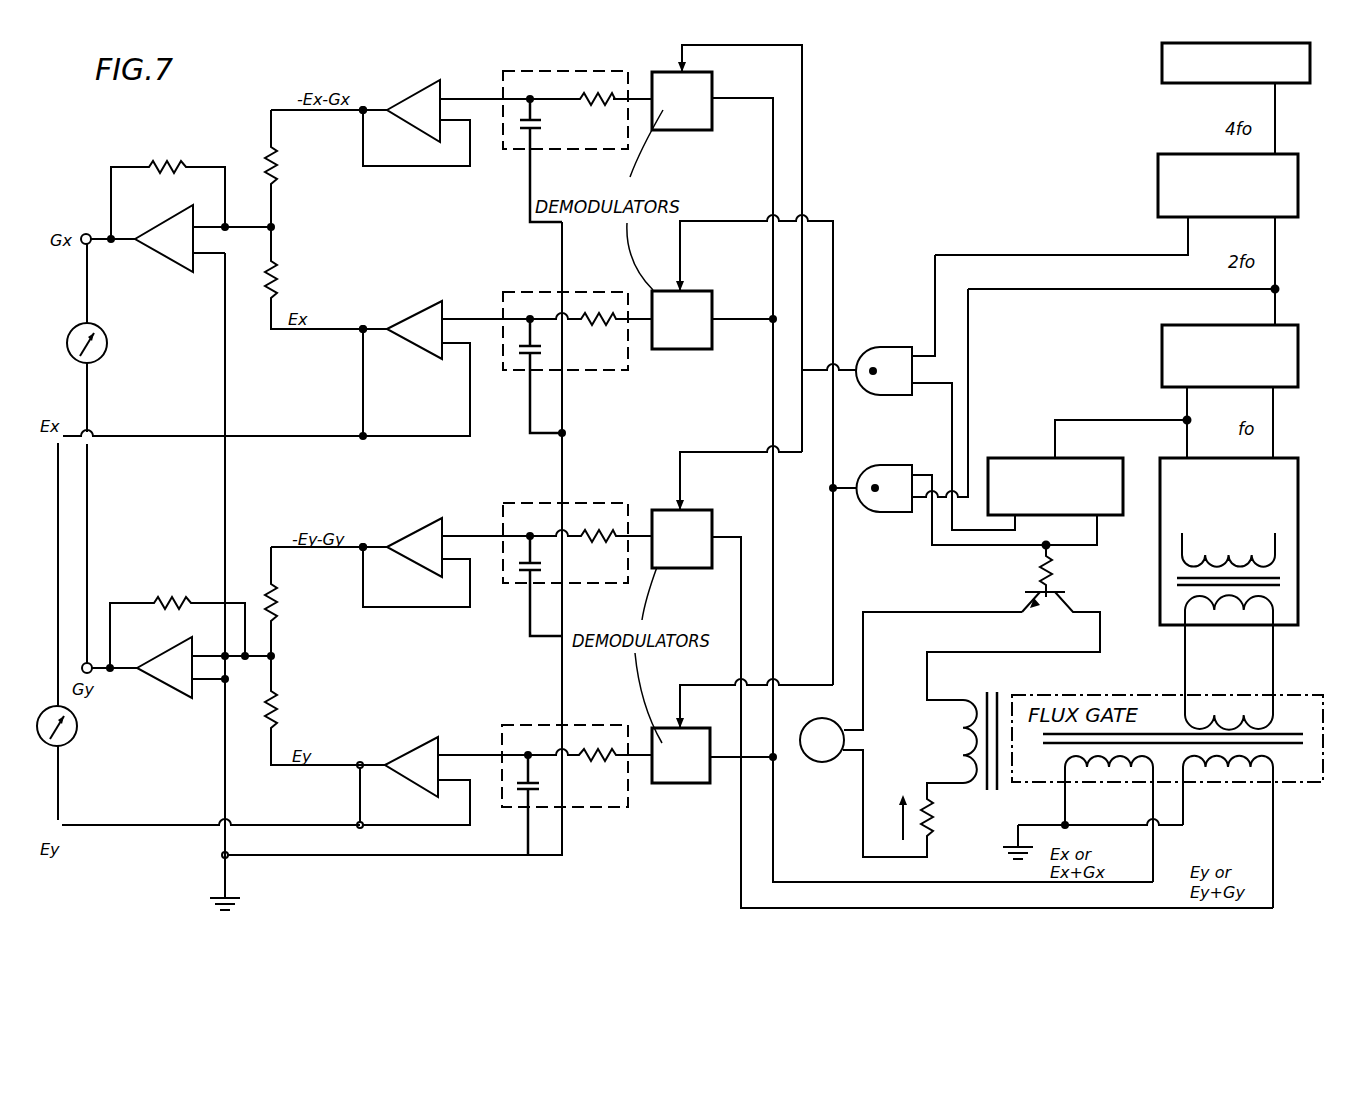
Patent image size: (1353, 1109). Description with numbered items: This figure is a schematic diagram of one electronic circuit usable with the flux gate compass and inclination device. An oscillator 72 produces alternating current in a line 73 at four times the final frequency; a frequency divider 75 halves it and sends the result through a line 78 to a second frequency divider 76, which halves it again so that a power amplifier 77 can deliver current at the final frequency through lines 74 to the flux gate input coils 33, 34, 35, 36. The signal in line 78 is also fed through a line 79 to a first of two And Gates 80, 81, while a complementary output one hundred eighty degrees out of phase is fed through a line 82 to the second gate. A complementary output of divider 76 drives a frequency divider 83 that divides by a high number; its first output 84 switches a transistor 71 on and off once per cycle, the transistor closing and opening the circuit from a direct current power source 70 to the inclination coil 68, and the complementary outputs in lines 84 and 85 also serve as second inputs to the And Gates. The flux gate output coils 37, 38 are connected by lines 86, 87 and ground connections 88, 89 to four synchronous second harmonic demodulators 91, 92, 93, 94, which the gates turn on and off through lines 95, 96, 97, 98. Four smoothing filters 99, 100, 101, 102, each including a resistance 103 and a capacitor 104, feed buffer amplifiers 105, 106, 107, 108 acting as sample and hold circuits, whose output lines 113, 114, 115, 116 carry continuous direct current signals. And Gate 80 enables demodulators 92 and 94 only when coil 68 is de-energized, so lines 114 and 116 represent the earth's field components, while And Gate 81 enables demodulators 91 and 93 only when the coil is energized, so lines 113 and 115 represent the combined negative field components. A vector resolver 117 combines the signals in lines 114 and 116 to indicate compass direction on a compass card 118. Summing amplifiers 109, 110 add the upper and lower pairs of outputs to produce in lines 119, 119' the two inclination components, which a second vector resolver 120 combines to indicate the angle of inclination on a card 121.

The flux gate input coil 33 is at (1229, 688).
The flux gate input coil 34 is at (1229, 688).
The flux gate input coil 35 is at (1229, 688).
The flux gate input coil 36 is at (1290, 648).
The flux gate output coil 37 is at (1098, 768).
The flux gate output coil 38 is at (1233, 772).
The inclination coil 68 is at (962, 740).
The direct current power source 70 is at (812, 762).
The transistor 71 is at (1040, 604).
The oscillator 72 is at (1160, 70).
The line 73 is at (1277, 130).
The lines 74 is at (1249, 670).
The frequency divider 75 is at (1158, 183).
The second frequency divider 76 is at (1160, 352).
The power amplifier 77 is at (1298, 500).
The line 78 is at (1278, 280).
The line 79 is at (1038, 291).
The And Gate 80 is at (881, 464).
The And Gate 81 is at (886, 348).
The line 82 is at (1018, 255).
The frequency divider 83 is at (1005, 458).
The first output 84 is at (1098, 536).
The line 85 is at (998, 530).
The line 86 is at (778, 870).
The line 87 is at (738, 858).
The ground connection 88 is at (1015, 835).
The ground connection 89 is at (231, 894).
The synchronous second harmonic demodulator 91 is at (683, 132).
The synchronous second harmonic demodulator 92 is at (703, 345).
The synchronous second harmonic demodulator 93 is at (688, 573).
The synchronous second harmonic demodulator 94 is at (672, 785).
The line 95 is at (742, 46).
The line 96 is at (717, 222).
The line 97 is at (718, 452).
The line 98 is at (705, 685).
The smoothing filter 99 is at (577, 131).
The smoothing filter 100 is at (593, 291).
The smoothing filter 101 is at (578, 501).
The smoothing filter 102 is at (590, 725).
The resistance 103 is at (598, 104).
The capacitor 104 is at (535, 128).
The buffer amplifier 105 is at (420, 90).
The buffer amplifier 106 is at (413, 315).
The buffer amplifier 107 is at (423, 525).
The buffer amplifier 108 is at (417, 752).
The summing amplifier 109 is at (172, 258).
The summing amplifier 110 is at (171, 648).
The output line 113 is at (345, 113).
The output line 114 is at (346, 331).
The output line 115 is at (332, 549).
The output line 116 is at (341, 766).
The vector resolver 117 is at (83, 736).
The compass card 118 is at (66, 737).
The line 119 is at (87, 222).
The line 119' is at (118, 684).
The second vector resolver 120 is at (113, 341).
The card 121 is at (99, 351).